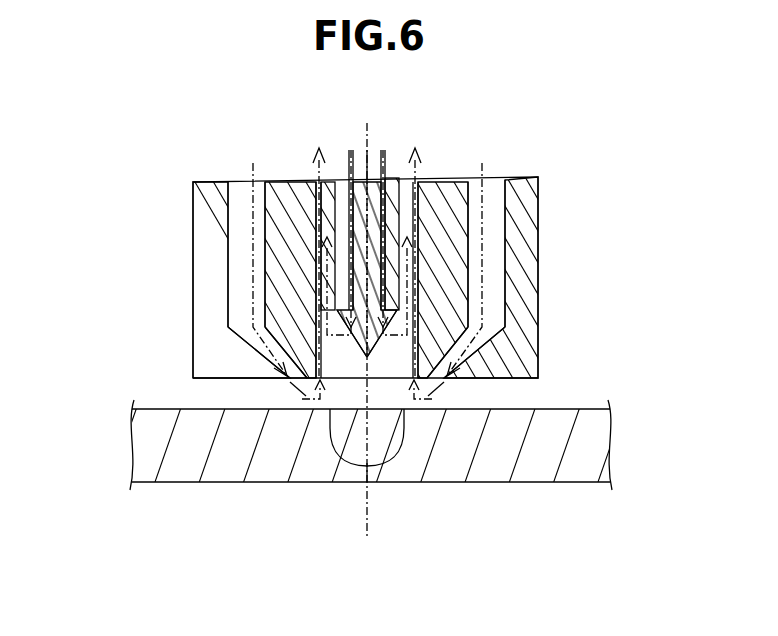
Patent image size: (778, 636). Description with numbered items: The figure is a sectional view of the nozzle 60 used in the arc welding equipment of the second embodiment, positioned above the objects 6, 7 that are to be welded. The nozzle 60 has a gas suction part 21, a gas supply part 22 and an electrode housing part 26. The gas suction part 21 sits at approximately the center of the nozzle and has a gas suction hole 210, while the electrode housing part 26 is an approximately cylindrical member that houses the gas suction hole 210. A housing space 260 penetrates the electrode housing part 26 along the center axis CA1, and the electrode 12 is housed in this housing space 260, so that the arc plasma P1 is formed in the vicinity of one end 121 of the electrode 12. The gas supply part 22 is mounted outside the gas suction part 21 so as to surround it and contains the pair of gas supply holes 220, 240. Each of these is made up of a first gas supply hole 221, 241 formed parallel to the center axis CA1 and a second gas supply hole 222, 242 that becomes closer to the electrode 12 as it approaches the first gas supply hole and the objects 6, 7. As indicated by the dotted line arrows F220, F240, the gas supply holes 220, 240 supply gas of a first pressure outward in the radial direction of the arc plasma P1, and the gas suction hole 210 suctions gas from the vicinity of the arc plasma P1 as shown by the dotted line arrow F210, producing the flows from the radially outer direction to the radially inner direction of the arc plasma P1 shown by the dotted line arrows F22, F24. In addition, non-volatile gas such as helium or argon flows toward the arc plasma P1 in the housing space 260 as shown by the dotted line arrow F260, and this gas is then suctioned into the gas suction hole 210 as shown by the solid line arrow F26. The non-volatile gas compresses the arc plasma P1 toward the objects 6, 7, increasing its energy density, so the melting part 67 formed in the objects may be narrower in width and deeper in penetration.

The electrode 12 is at (372, 178).
The nozzle 60 is at (545, 171).
The electrode housing part 26 is at (470, 181).
The housing space 260 is at (237, 210).
The first gas supply hole 221 is at (237, 236).
The gas flow of gas supply hole F220 is at (252, 247).
The gas supply hole 220 is at (224, 282).
The one end of the electrode 121 is at (265, 330).
The gas supply part 22 is at (225, 335).
The second gas supply hole 222 is at (263, 368).
The gas suction flow F210 is at (314, 170).
The non-volatile gas flow F260 is at (346, 152).
The gas suction part 21 is at (425, 340).
The gas suction hole 210 is at (398, 330).
The gas supply hole 240 is at (507, 264).
The first gas supply hole 241 is at (495, 217).
The gas flow of gas supply hole F240 is at (482, 236).
The second gas supply hole 242 is at (478, 368).
The suctioned non-volatile gas flow F26 is at (302, 399).
The gas flow F22 is at (300, 397).
The gas flow F24 is at (434, 397).
The arc plasma P1 is at (340, 410).
The melting part 67 is at (350, 464).
The center axis CA1 is at (367, 530).
The object 6 is at (600, 458).
The object 7 is at (150, 466).